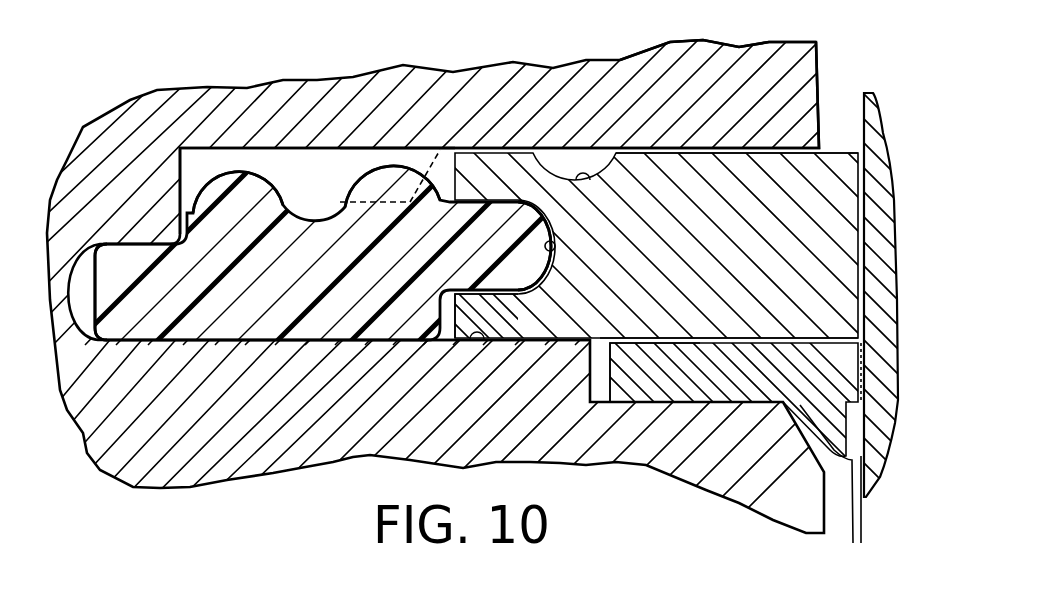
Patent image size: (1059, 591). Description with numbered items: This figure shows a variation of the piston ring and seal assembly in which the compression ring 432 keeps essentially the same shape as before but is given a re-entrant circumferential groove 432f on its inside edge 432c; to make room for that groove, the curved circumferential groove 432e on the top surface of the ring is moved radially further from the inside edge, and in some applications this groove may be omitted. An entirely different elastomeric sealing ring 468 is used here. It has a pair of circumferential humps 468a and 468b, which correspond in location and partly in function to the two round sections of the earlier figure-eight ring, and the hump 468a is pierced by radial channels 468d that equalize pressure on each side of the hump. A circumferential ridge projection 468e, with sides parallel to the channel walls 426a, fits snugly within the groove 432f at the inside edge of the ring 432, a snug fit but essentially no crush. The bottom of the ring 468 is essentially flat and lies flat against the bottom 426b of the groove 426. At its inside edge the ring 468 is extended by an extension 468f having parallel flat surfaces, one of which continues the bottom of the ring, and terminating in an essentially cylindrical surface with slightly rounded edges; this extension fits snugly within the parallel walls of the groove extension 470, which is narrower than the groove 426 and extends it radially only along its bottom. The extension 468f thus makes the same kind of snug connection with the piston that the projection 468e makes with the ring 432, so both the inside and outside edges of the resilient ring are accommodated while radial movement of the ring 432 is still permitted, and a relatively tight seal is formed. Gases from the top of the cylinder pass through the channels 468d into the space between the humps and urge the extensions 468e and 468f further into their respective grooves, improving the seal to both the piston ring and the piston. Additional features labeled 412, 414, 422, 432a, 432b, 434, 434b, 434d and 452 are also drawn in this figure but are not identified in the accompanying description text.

The housing 412 is at (758, 92).
The flange 414 is at (863, 117).
The housing outer surface 422 is at (682, 63).
The groove 426 is at (440, 148).
The channel walls 426a is at (413, 150).
The bottom of groove 426b is at (463, 341).
The compression ring 432 is at (735, 259).
The retainer top surface 432a is at (653, 153).
The retainer bottom surface 432b is at (733, 336).
The inside edge 432c is at (463, 303).
The curved circumferential groove 432e is at (590, 181).
The re-entrant circumferential groove 432f is at (558, 247).
The clamp member 434 is at (730, 382).
The clamp member end 434b is at (686, 398).
The clamp member edge 434d is at (746, 340).
The lip 452 is at (853, 543).
The elastomeric sealing ring 468 is at (355, 284).
The circumferential hump 468a is at (386, 180).
The circumferential hump 468b is at (247, 180).
The channels 468d is at (450, 148).
The circumferential ridge projection 468e is at (536, 252).
The extension 468f is at (98, 278).
The groove extension 470 is at (80, 300).